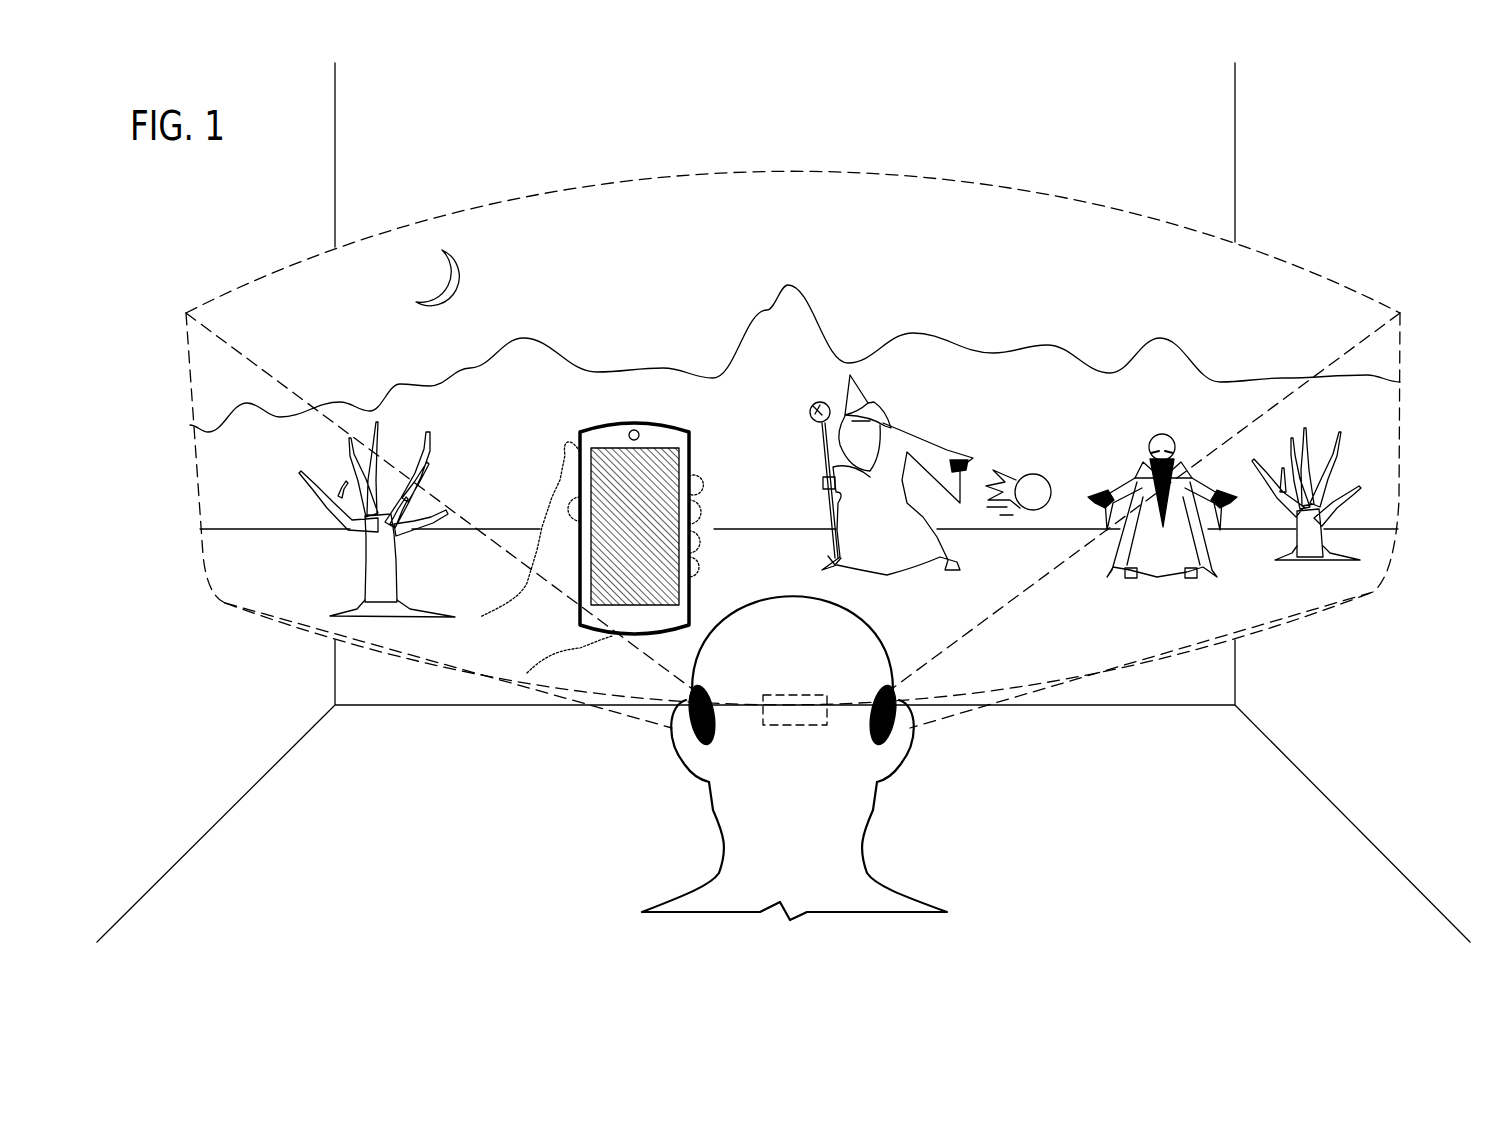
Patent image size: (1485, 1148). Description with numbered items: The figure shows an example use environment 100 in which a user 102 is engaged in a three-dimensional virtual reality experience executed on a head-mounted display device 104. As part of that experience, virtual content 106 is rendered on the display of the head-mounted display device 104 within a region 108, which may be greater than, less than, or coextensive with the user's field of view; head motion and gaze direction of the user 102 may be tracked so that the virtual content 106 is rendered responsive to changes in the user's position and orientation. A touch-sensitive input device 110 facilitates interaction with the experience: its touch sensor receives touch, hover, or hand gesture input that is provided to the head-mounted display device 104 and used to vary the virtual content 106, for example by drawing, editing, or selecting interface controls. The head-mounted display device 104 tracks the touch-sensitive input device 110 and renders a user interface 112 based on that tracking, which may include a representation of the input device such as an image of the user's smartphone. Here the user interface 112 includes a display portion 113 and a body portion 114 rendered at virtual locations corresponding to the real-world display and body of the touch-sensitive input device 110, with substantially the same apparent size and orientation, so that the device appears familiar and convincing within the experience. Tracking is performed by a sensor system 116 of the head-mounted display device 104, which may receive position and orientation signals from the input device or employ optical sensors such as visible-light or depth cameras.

The use environment 100 is at (1043, 128).
The user 102 is at (661, 790).
The head-mounted display (HMD) device 104 is at (876, 748).
The virtual content 106 is at (833, 252).
The region 108 is at (796, 170).
The touch-sensitive input device 110 is at (664, 503).
The user interface 112 is at (633, 418).
The display portion 113 is at (598, 447).
The body portion 114 is at (580, 440).
The sensor system 116 is at (712, 710).